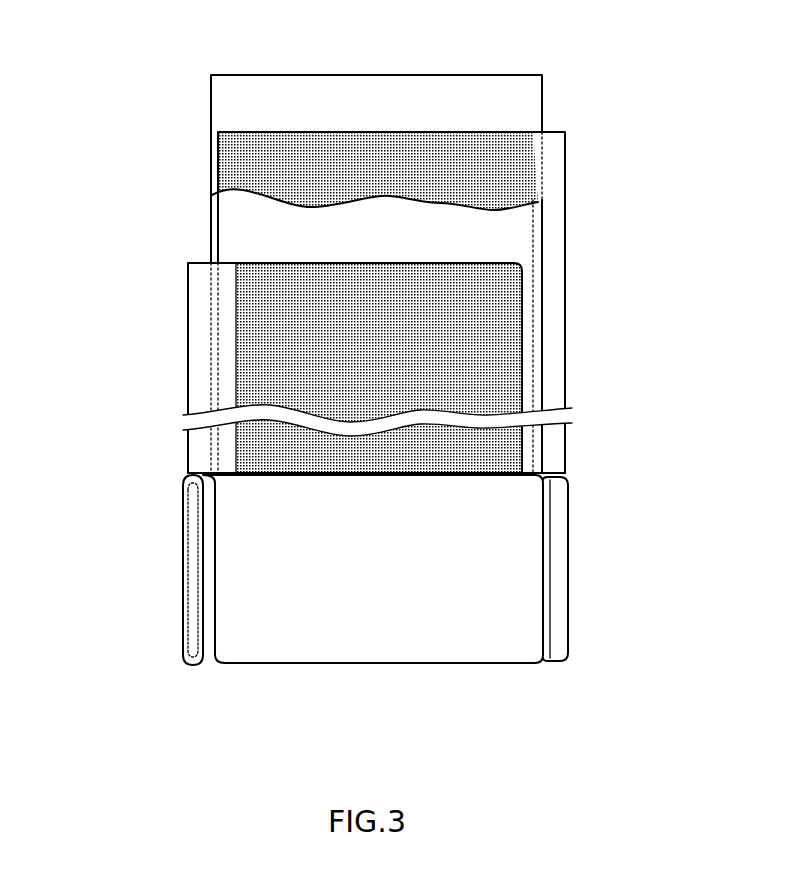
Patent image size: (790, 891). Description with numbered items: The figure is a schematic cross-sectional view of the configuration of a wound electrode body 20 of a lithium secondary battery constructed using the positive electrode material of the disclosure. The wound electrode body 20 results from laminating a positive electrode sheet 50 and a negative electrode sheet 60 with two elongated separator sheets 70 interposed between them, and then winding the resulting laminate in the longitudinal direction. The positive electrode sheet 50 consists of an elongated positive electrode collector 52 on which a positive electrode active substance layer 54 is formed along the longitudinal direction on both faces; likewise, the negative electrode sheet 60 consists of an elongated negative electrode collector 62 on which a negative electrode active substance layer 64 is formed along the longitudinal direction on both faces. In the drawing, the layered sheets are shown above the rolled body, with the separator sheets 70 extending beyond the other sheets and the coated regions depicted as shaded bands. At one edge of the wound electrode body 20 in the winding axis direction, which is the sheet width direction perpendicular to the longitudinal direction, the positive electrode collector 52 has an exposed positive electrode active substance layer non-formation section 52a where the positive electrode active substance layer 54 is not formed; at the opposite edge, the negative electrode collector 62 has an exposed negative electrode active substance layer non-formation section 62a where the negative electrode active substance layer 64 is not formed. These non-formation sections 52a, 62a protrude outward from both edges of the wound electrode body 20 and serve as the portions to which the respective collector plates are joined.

The wound electrode body 20 is at (437, 643).
The positive electrode sheet 50 is at (186, 335).
The positive electrode collector 52 is at (185, 400).
The positive electrode active substance layer non-formation section 52a is at (205, 367).
The positive electrode active substance layer 54 is at (240, 280).
The negative electrode sheet 60 is at (566, 210).
The negative electrode collector 62 is at (568, 312).
The negative electrode active substance layer non-formation section 62a is at (552, 280).
The negative electrode active substance layer 64 is at (528, 160).
The separator sheet 70 is at (230, 97).